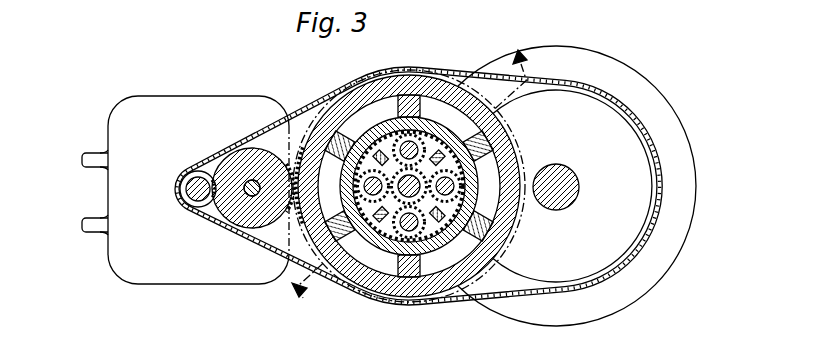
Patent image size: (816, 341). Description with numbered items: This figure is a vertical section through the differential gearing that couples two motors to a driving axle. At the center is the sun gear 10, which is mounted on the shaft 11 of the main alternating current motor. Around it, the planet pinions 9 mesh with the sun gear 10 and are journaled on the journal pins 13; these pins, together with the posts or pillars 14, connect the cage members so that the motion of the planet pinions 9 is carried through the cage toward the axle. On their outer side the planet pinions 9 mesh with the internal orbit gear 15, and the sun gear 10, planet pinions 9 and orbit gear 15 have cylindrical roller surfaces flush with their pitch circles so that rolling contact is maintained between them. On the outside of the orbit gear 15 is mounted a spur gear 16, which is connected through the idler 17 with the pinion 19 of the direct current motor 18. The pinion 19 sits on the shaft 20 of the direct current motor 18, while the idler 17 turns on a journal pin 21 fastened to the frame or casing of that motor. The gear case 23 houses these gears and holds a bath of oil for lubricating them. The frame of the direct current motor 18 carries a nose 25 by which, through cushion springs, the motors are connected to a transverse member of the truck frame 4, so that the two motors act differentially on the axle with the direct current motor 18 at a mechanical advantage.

The truck frame 4 is at (400, 167).
The planet pinions 9 is at (356, 188).
The sun gear 10 is at (433, 142).
The shaft 11 is at (458, 183).
The journal pins 13 is at (386, 127).
The posts or pillars 14 is at (365, 244).
The internal orbit gear 15 is at (436, 232).
The spur gear 16 is at (408, 290).
The idler 17 is at (245, 228).
The direct current motor 18 is at (205, 113).
The pinion 19 is at (206, 210).
The shaft 20 is at (186, 208).
The journal pin 21 is at (250, 146).
The gear case 23 is at (440, 70).
The nose 25 is at (82, 226).